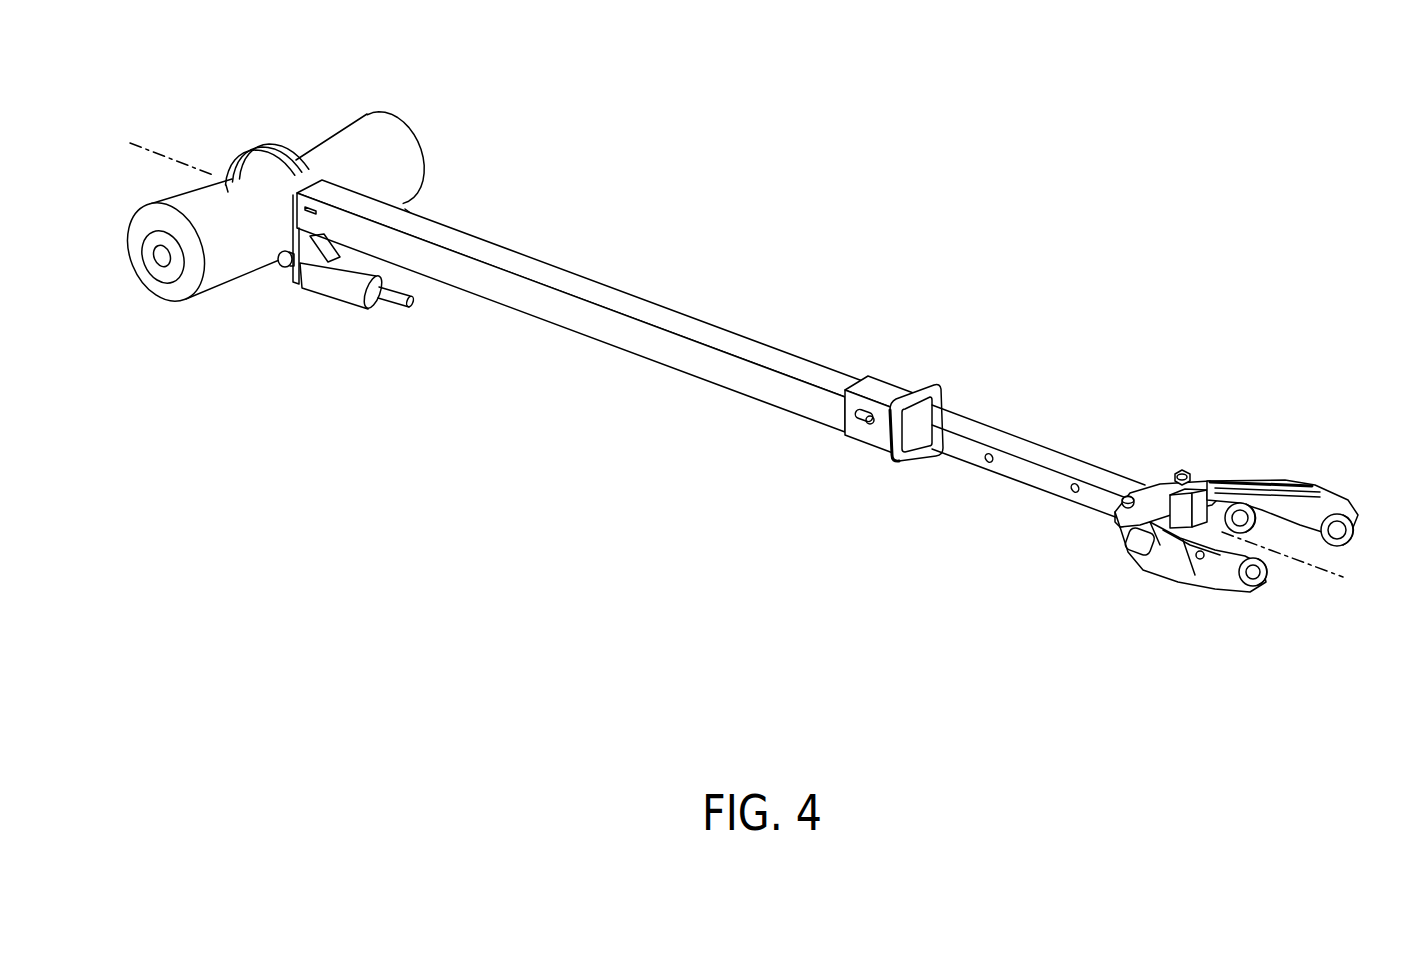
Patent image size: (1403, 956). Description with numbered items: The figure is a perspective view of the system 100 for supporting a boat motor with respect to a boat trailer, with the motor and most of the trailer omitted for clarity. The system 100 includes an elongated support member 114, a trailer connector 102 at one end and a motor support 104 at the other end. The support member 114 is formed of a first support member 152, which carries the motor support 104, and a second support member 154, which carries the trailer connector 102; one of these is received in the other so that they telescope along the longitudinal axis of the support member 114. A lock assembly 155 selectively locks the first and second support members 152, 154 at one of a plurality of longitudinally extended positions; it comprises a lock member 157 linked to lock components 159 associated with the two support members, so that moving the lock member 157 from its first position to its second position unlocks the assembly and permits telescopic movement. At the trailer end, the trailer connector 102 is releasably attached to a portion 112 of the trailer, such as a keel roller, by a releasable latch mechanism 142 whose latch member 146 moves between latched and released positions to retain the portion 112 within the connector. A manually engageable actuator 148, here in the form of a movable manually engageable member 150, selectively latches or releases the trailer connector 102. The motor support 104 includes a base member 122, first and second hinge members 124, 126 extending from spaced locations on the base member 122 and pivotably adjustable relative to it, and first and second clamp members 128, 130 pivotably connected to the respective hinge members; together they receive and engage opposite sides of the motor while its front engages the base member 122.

The system 100 is at (606, 222).
The trailer connector 102 is at (297, 310).
The motor support 104 is at (1203, 443).
The portion of the boat trailer 112 is at (423, 101).
The support member 114 is at (736, 334).
The base member 122 is at (1160, 481).
The first hinge member 124 is at (1152, 550).
The second hinge member 126 is at (1263, 481).
The first clamp member 128 is at (1218, 557).
The second clamp member 130 is at (1338, 488).
The releasable latch mechanism 142 is at (351, 304).
The latch member 146 is at (289, 268).
The manually engageable actuator 148 is at (834, 456).
The manually engageable member 150 is at (901, 385).
The first support member 152 is at (1004, 427).
The second support member 154 is at (451, 233).
The lock assembly 155 is at (882, 376).
The lock member 157 is at (871, 426).
The lock components 159 is at (988, 463).